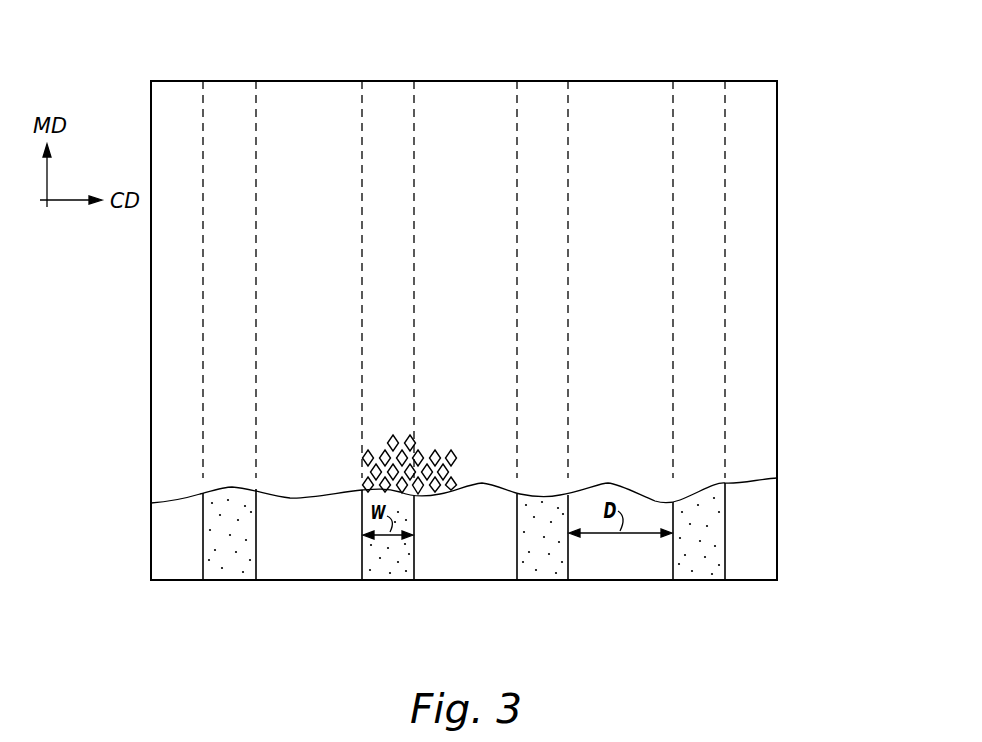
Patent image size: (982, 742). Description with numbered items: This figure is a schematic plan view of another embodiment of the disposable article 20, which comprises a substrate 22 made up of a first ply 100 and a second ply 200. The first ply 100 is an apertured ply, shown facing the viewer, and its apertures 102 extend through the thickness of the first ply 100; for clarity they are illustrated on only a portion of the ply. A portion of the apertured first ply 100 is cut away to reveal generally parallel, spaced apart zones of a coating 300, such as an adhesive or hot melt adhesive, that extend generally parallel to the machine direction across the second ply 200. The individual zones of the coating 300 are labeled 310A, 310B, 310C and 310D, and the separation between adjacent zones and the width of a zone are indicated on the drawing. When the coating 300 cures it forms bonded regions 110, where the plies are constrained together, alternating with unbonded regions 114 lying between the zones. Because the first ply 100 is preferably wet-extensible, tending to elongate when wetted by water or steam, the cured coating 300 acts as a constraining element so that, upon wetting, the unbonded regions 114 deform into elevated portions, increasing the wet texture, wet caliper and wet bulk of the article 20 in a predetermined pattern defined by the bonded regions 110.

The disposable article 20 is at (805, 131).
The substrate 22 is at (788, 227).
The first ply 100 is at (763, 457).
The second ply 200 is at (713, 537).
The apertures 102 is at (392, 437).
The bonded regions 110 is at (203, 71).
The unbonded regions 114 is at (203, 71).
The coating 300 is at (429, 572).
The first bond site 310A is at (215, 573).
The second bond site 310B is at (373, 573).
The third bond site 310C is at (528, 573).
The fourth bond site 310D is at (683, 573).